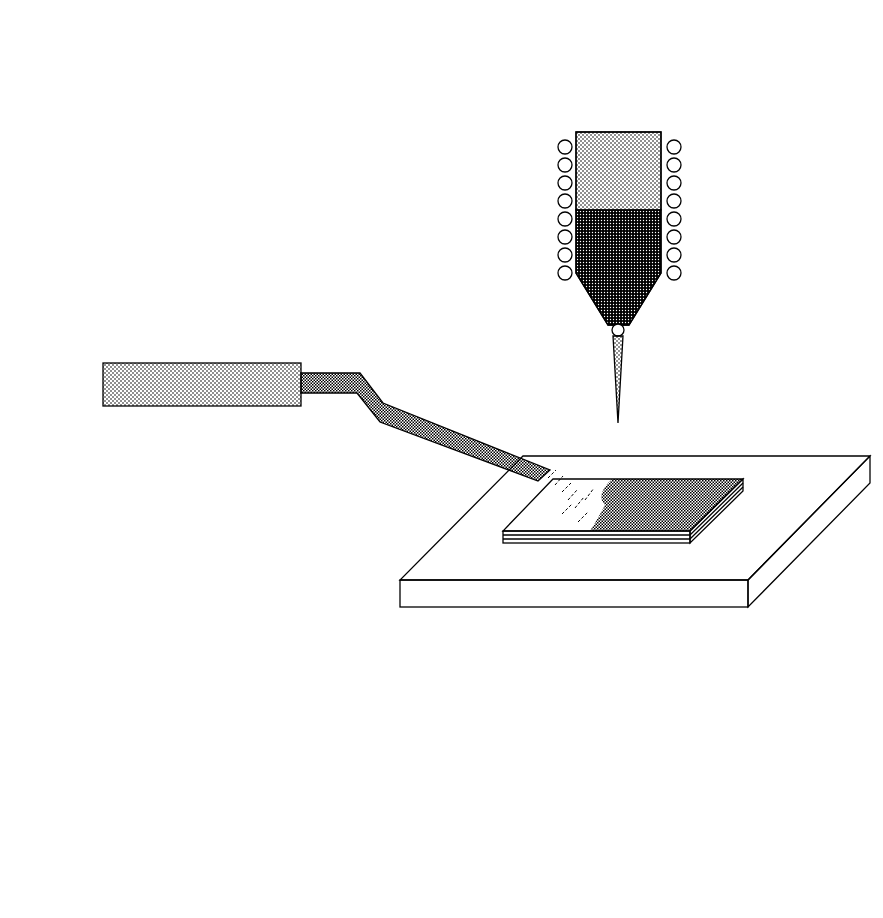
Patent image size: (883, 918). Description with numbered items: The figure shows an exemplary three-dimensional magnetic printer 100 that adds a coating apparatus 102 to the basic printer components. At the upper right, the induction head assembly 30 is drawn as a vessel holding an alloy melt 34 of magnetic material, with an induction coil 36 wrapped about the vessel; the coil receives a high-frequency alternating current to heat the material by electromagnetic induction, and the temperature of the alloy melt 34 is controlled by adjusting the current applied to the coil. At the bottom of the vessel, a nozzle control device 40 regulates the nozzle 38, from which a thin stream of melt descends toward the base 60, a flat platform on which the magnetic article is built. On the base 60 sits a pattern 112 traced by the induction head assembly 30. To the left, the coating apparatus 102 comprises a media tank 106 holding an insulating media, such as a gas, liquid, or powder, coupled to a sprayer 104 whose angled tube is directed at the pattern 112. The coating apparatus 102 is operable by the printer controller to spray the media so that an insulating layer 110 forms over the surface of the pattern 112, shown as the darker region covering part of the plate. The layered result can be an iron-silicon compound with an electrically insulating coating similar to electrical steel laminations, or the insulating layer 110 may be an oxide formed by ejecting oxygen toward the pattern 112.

The 3D magnetic printer 100 is at (756, 86).
The induction head assembly 30 is at (594, 102).
The alloy melt 34 is at (593, 292).
The induction coil 36 is at (559, 141).
The nozzle 38 is at (621, 372).
The nozzle control device 40 is at (624, 329).
The coating apparatus 102 is at (332, 360).
The sprayer 104 is at (457, 453).
The media tank 106 is at (218, 363).
The base 60 is at (417, 562).
The insulating layer 110 is at (706, 472).
The pattern 112 is at (542, 520).